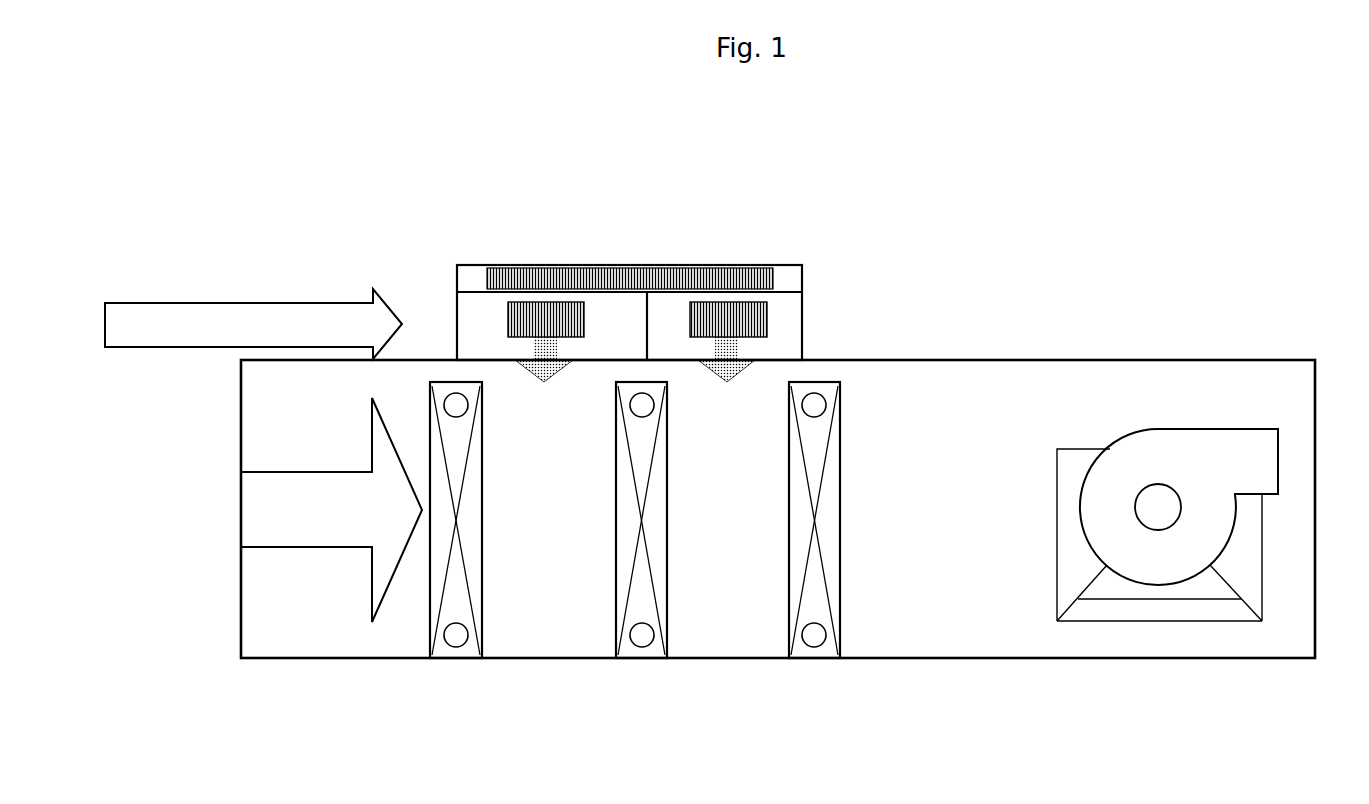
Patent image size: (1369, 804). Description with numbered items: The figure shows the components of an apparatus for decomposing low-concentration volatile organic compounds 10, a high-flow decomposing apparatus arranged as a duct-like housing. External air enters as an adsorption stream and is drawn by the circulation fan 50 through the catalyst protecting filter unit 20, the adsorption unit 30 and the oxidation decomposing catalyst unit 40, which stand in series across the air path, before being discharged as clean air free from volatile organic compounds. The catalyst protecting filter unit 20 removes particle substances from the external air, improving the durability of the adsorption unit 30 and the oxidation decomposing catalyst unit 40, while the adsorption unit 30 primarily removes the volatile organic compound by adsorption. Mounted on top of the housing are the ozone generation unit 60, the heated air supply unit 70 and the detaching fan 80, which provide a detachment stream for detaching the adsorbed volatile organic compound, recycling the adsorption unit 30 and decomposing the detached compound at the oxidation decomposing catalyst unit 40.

The apparatus for decomposing low-concentration volatile organic compounds 10 is at (710, 404).
The catalyst protecting filter unit 20 is at (455, 659).
The adsorption unit 30 is at (635, 659).
The oxidation decomposing catalyst unit 40 is at (827, 659).
The circulation fan 50 is at (1218, 428).
The ozone generation unit 60 is at (786, 327).
The heated air supply unit 70 is at (476, 328).
The detaching fan 80 is at (762, 265).